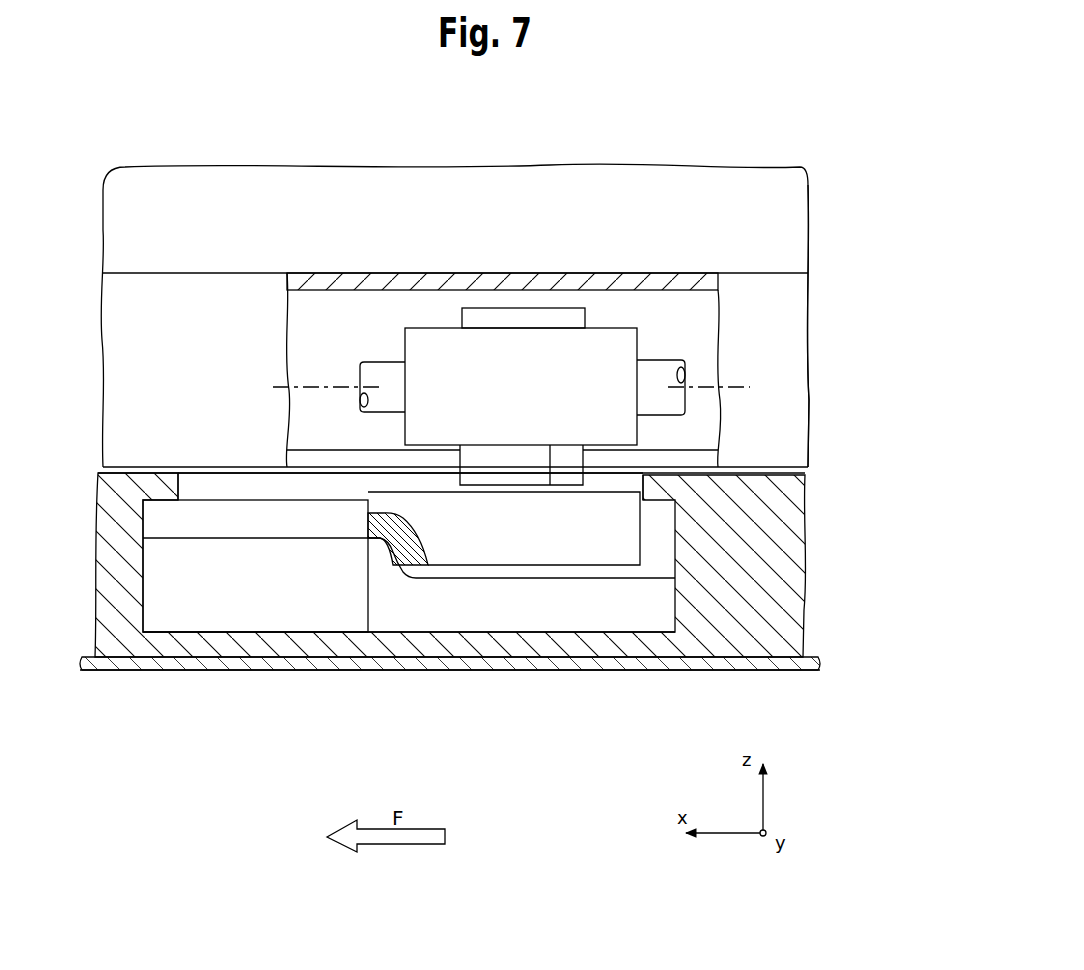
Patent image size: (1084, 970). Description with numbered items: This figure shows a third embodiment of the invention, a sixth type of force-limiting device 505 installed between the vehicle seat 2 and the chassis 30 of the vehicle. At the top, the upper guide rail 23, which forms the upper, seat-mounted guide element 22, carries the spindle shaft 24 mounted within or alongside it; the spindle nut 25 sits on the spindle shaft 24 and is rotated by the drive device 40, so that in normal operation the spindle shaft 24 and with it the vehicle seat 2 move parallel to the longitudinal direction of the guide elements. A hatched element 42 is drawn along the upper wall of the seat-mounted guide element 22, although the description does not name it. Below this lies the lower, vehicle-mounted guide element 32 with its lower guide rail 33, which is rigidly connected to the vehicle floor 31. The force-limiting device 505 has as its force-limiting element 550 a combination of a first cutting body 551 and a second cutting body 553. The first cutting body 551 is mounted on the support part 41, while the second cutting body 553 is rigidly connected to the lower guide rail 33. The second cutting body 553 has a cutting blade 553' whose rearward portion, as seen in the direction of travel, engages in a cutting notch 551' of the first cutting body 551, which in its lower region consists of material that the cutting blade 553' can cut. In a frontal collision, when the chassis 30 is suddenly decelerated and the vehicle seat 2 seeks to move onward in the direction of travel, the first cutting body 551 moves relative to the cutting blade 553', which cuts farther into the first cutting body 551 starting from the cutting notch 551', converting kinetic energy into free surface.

The vehicle seat 2 is at (776, 205).
The upper, seat-mounted guide element 22 is at (814, 332).
The upper guide rail 23 is at (777, 418).
The spindle shaft 24 is at (657, 375).
The spindle nut 25 is at (605, 350).
The chassis 30 is at (580, 662).
The vehicle floor 31 is at (652, 660).
The lower, vehicle-mounted guide element 32 is at (812, 535).
The lower guide rail 33 is at (782, 598).
The drive device 40 is at (487, 450).
The support part 41 is at (548, 480).
The bearing element 42 is at (378, 311).
The force-limiting device 505 is at (233, 465).
The force-limiting element 550 is at (343, 485).
The first cutting body 551 is at (521, 608).
The cutting notch 551' is at (370, 568).
The second cutting body 553 is at (255, 615).
The cutting blade 553' is at (255, 533).